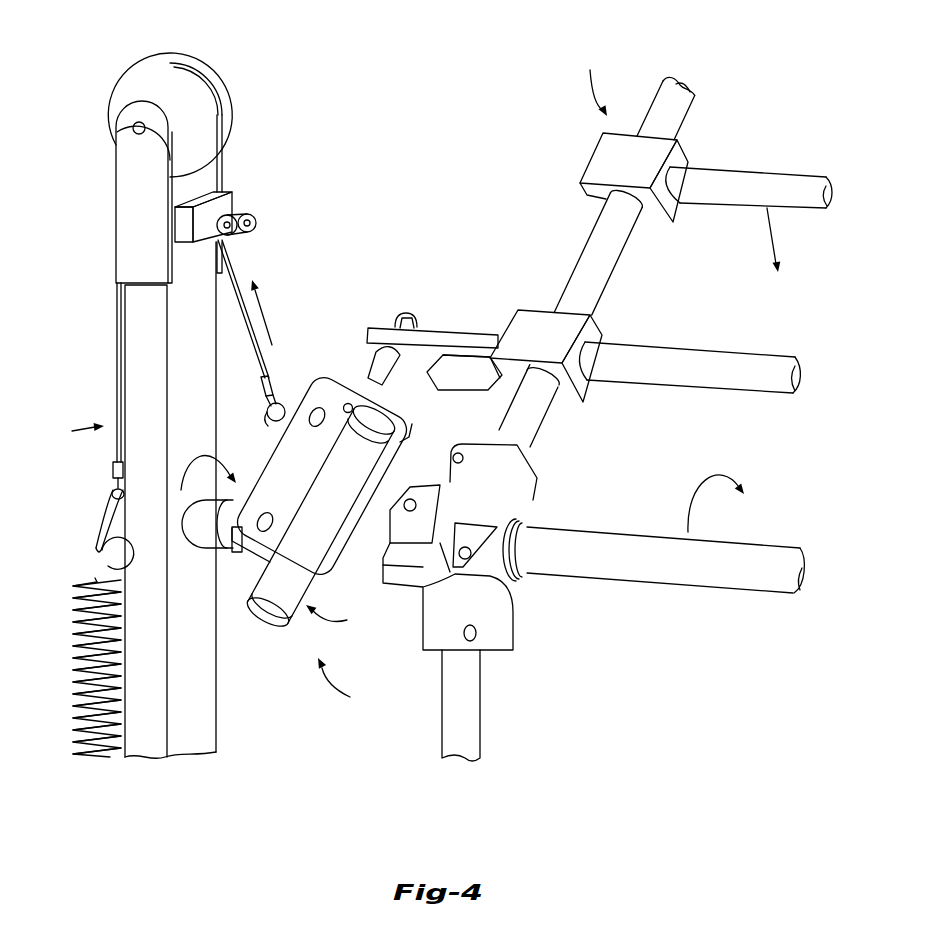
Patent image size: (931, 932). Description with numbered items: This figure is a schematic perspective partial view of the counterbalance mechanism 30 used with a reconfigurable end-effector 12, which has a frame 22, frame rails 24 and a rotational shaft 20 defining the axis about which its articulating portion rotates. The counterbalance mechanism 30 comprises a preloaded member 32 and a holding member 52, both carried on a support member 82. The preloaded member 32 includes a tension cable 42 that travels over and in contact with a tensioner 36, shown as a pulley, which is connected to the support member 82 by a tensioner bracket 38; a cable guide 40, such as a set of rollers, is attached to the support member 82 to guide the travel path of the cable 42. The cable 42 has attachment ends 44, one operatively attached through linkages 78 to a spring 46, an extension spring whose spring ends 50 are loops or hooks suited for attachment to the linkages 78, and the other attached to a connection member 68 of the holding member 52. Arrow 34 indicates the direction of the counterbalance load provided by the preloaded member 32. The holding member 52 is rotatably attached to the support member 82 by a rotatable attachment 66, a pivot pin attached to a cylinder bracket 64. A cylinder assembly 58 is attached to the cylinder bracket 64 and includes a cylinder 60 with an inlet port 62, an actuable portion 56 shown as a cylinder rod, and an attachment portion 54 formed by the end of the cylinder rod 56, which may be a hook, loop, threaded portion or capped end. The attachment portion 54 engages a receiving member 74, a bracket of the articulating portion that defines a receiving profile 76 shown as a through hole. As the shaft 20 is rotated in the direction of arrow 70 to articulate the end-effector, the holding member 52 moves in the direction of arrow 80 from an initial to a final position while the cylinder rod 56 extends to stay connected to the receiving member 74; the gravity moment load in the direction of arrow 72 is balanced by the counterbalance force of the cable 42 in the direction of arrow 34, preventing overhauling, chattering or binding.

The end-effector 12 is at (634, 132).
The rotational shaft 20 is at (628, 584).
The frame 22 is at (583, 248).
The frame rails 24 is at (762, 166).
The counterbalance mechanism 30 is at (74, 432).
The preloaded member 32 is at (88, 100).
The arrow indicating direction of counterbalance load 34 is at (265, 312).
The tensioner 36 is at (222, 80).
The tensioner bracket 38 is at (128, 231).
The cable guide 40 is at (250, 215).
The cable 42 is at (237, 268).
The attachment ends 44 is at (268, 386).
The spring 46 is at (75, 655).
The spring ends 50 is at (77, 556).
The holding member 52 is at (334, 513).
The attachment portion 54 is at (408, 318).
The actuable portion 56 is at (388, 368).
The cylinder assembly 58 is at (337, 618).
The cylinder 60 is at (305, 572).
The inlet port 62 is at (355, 410).
The cylinder bracket 64 is at (330, 373).
The rotatable attachment 66 is at (205, 550).
The connection member 68 is at (270, 420).
The arrow indicating direction of rotation 70 is at (690, 488).
The arrow indicating direction of gravity moment load 72 is at (768, 234).
The receiving member 74 is at (450, 330).
The receiving profile 76 is at (368, 327).
The linkages 78 is at (105, 520).
The arrow indicating direction of holding member movement 80 is at (208, 450).
The support member 82 is at (198, 712).